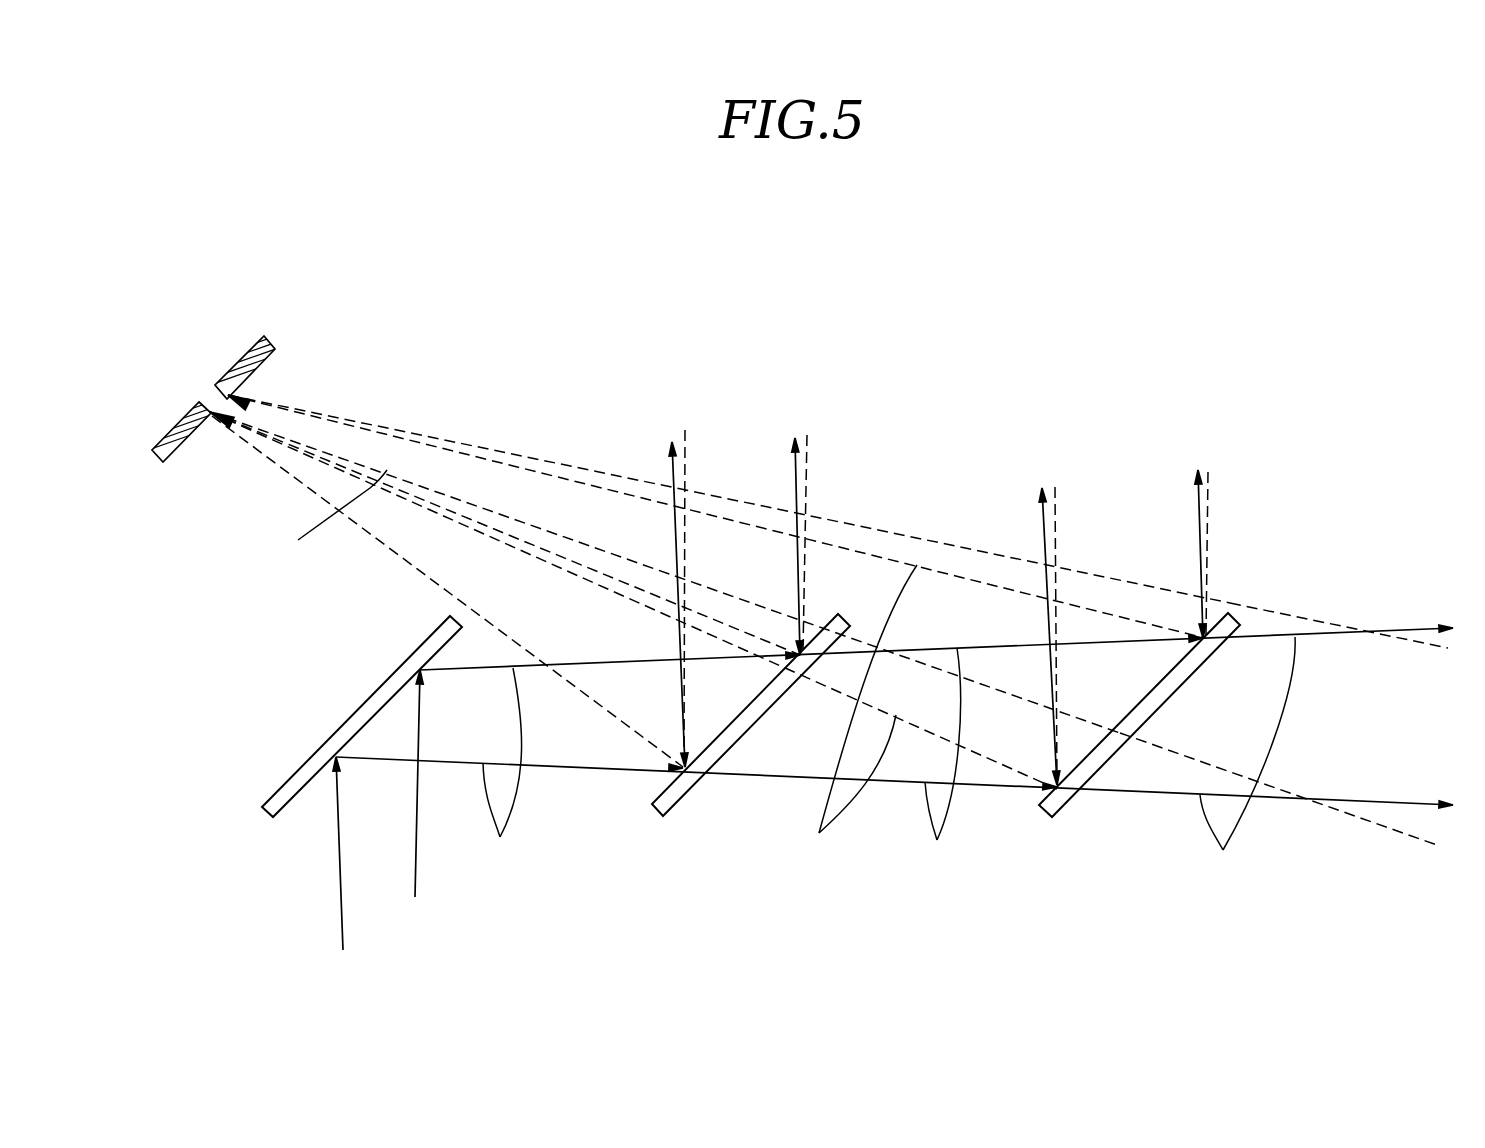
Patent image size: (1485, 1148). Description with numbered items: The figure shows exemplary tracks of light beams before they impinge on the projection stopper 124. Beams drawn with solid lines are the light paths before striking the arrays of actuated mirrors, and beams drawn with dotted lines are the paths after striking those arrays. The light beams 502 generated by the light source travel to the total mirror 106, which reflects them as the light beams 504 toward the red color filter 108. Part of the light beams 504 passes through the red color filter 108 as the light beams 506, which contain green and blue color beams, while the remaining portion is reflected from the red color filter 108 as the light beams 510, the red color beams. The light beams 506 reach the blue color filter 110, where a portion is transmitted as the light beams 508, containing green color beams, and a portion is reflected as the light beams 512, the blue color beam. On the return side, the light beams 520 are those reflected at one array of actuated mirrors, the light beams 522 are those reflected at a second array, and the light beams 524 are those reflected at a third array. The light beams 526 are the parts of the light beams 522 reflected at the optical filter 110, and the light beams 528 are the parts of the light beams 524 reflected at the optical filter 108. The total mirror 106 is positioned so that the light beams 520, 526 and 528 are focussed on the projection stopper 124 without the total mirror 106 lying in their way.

The projection stopper 124 is at (252, 348).
The total mirror 106 is at (342, 728).
The red color filter 108 is at (670, 810).
The blue color filter 110 is at (1050, 815).
The light beams 502 is at (417, 830).
The light beams 504 is at (507, 774).
The light beams 506 is at (938, 762).
The light beams 508 is at (1246, 762).
The light beams 510 is at (795, 492).
The light beams 512 is at (1197, 518).
The light beams 520 is at (1188, 757).
The light beams 522 is at (1055, 553).
The light beams 524 is at (683, 437).
The light beams 526 is at (855, 719).
The light beams 528 is at (333, 503).